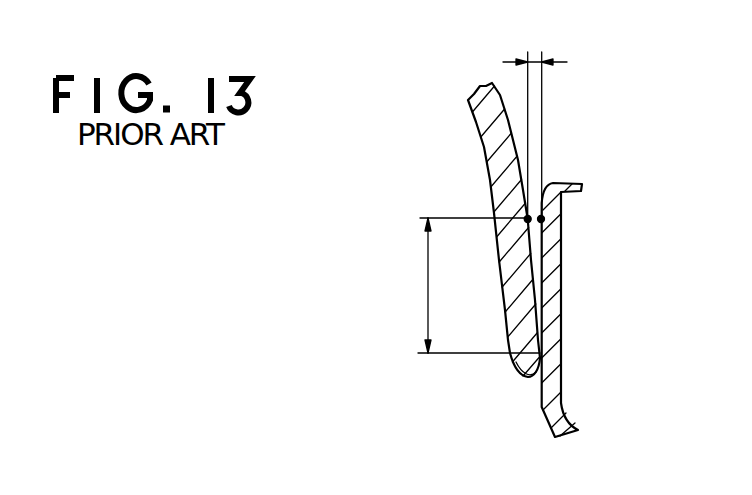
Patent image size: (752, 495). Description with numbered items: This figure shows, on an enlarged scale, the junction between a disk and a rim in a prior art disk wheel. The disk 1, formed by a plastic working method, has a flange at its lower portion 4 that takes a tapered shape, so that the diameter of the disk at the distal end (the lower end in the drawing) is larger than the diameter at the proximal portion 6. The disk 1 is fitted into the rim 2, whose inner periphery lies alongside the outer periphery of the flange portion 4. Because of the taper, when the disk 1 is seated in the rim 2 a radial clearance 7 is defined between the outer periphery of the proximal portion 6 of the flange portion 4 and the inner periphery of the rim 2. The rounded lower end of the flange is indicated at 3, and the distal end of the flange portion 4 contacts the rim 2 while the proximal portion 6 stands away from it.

The disk 1 is at (482, 115).
The rim 2 is at (557, 317).
The rounded end portion 3 is at (526, 371).
The flange portion 4 is at (427, 292).
The proximal portion 6 is at (526, 218).
The radial clearance 7 is at (532, 62).